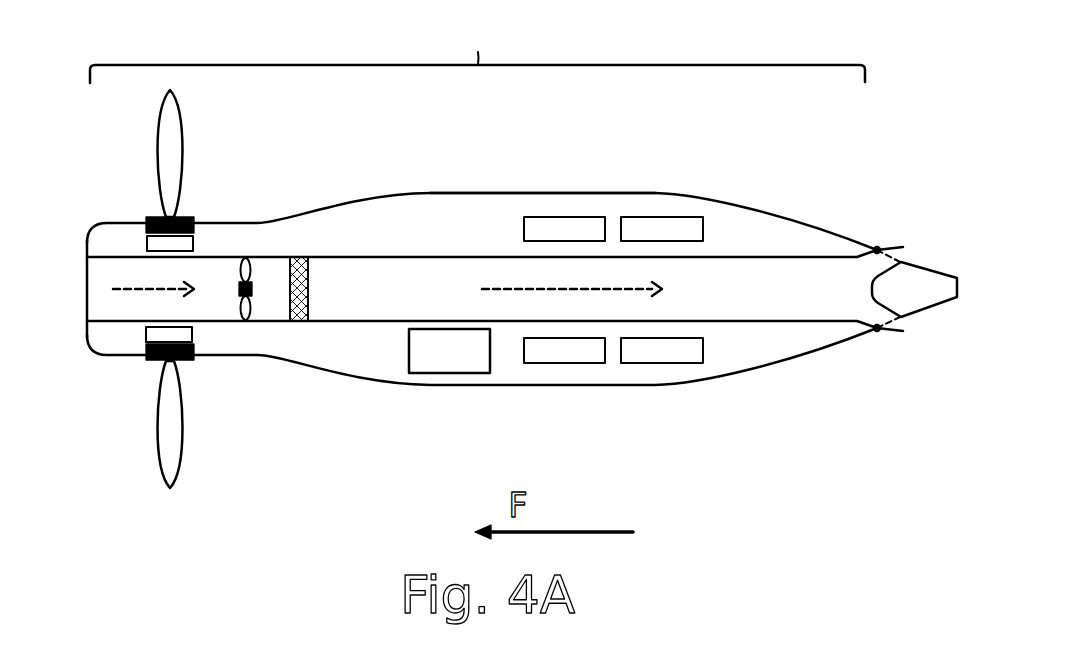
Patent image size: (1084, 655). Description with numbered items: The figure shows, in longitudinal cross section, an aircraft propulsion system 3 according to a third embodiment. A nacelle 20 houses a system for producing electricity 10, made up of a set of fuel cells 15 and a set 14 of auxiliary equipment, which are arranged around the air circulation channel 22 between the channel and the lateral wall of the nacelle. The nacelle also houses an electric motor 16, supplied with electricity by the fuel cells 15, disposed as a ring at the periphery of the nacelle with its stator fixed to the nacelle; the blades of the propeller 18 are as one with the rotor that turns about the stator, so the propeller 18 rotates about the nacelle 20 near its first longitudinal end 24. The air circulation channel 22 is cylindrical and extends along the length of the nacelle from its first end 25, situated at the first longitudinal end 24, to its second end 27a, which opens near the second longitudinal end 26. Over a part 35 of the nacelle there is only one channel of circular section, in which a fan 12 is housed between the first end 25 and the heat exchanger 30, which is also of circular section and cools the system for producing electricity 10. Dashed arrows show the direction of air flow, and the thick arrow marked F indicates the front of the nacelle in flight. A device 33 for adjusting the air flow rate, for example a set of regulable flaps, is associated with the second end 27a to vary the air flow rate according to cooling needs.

The aircraft propulsion system 3 is at (901, 101).
The system for producing electricity 10 is at (662, 413).
The fan 12 is at (245, 318).
The set of equipment auxiliary to the fuel cells 14 is at (456, 373).
The fuel cells 15 is at (595, 379).
The electric motor 16 is at (208, 228).
The propeller 18 is at (183, 115).
The nacelle 20 is at (735, 206).
The air circulation channel 22 is at (410, 277).
The first longitudinal end of the nacelle 24 is at (93, 411).
The first end of the air circulation channel 25 is at (73, 258).
The second longitudinal end of the nacelle 26 is at (949, 370).
The second end of the air circulation channel 27a is at (848, 299).
The heat exchanger 30 is at (300, 321).
The device for adjusting the air flow rate 33 is at (893, 248).
The part of the nacelle 35 is at (477, 45).